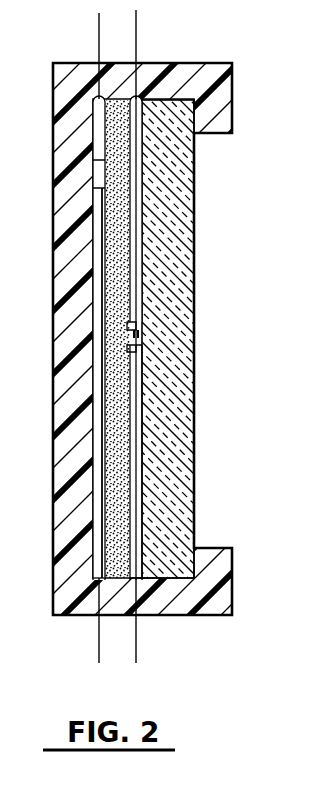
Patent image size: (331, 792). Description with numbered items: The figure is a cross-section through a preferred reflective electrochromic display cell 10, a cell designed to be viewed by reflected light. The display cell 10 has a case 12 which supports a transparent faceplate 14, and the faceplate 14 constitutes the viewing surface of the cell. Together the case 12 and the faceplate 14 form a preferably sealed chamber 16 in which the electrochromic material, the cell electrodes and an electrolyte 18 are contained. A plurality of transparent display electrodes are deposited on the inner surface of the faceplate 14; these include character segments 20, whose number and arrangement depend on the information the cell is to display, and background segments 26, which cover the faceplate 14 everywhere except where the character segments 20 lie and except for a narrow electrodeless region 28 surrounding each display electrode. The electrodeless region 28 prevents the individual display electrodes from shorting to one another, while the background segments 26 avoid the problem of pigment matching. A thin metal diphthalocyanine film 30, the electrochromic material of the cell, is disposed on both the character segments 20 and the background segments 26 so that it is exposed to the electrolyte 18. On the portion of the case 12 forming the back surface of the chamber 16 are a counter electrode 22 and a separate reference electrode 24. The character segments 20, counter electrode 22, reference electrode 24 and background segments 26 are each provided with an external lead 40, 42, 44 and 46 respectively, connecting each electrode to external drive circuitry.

The display cell 10 is at (213, 375).
The case 12 is at (82, 450).
The transparent faceplate 14 is at (157, 520).
The sealed chamber 16 is at (117, 232).
The electrolyte 18 is at (108, 265).
The character segments 20 is at (137, 283).
The counter electrode 22 is at (97, 292).
The reference electrode 24 is at (97, 138).
The background segments 26 is at (135, 462).
The electrodeless region 28 is at (140, 337).
The metal diphthalocyanine film 30 is at (134, 162).
The external lead 40 is at (136, 36).
The external lead 42 is at (99, 636).
The external lead 44 is at (99, 36).
The external lead 46 is at (136, 635).